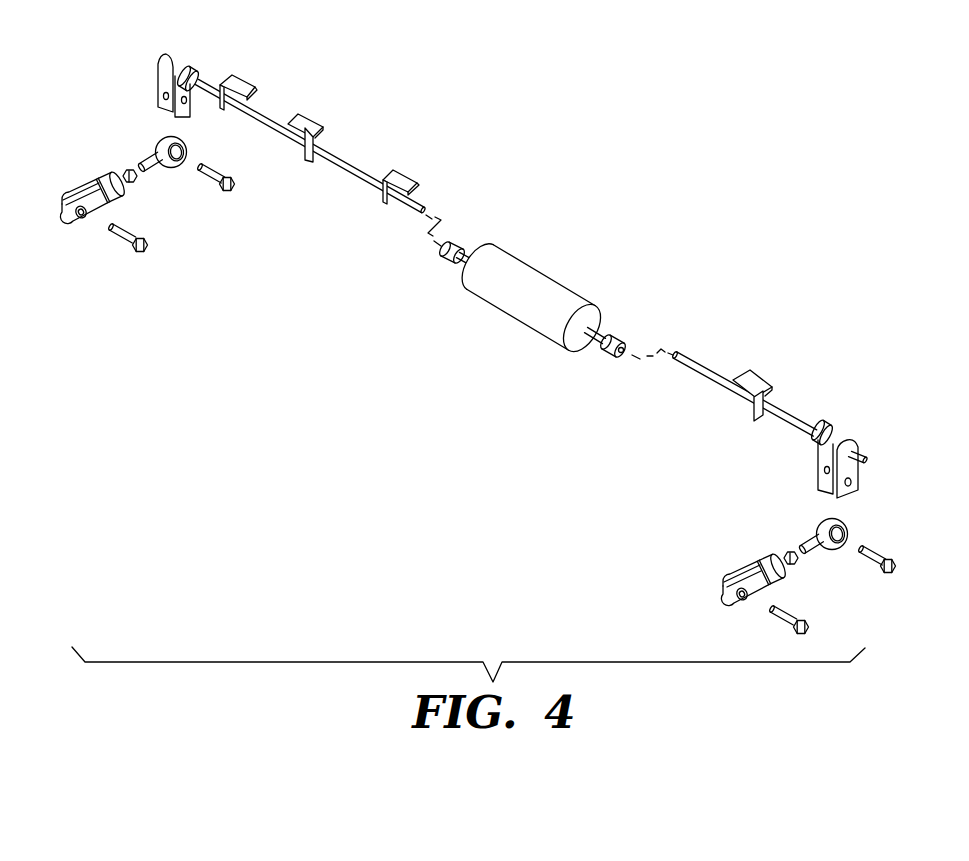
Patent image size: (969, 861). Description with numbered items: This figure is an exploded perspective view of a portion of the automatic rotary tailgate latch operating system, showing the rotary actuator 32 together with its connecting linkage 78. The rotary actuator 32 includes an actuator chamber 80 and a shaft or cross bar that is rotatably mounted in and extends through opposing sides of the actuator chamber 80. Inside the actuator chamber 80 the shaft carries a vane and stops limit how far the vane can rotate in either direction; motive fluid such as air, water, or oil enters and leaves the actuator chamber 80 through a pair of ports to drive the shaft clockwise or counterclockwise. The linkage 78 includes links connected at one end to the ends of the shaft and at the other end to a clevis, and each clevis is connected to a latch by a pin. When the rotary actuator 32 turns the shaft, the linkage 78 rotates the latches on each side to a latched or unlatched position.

The connecting linkage 78 is at (284, 102).
The actuator chamber 80 is at (535, 298).
The rotary actuator 32 is at (515, 314).